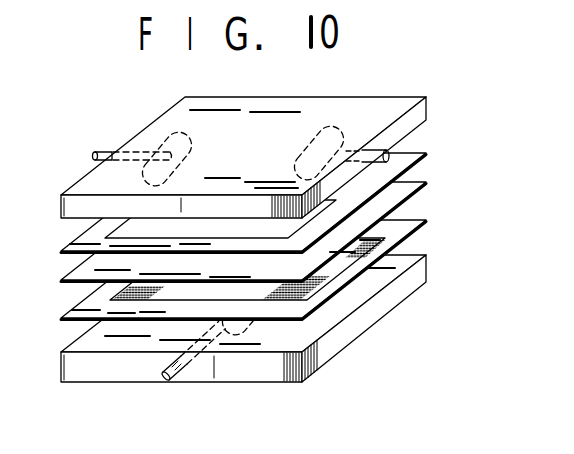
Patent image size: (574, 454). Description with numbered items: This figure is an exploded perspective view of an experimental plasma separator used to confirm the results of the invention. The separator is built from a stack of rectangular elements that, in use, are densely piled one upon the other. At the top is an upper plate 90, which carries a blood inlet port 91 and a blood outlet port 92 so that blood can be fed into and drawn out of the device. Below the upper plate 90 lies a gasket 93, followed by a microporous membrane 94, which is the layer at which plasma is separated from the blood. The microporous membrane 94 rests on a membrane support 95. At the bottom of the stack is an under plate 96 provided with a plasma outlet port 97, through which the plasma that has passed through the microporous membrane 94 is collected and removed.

The upper plate 90 is at (390, 107).
The blood inlet port 91 is at (93, 152).
The blood outlet port 92 is at (390, 155).
The gasket 93 is at (400, 165).
The microporous membrane 94 is at (399, 193).
The membrane support 95 is at (407, 230).
The under plate 96 is at (365, 315).
The plasma outlet port 97 is at (165, 383).